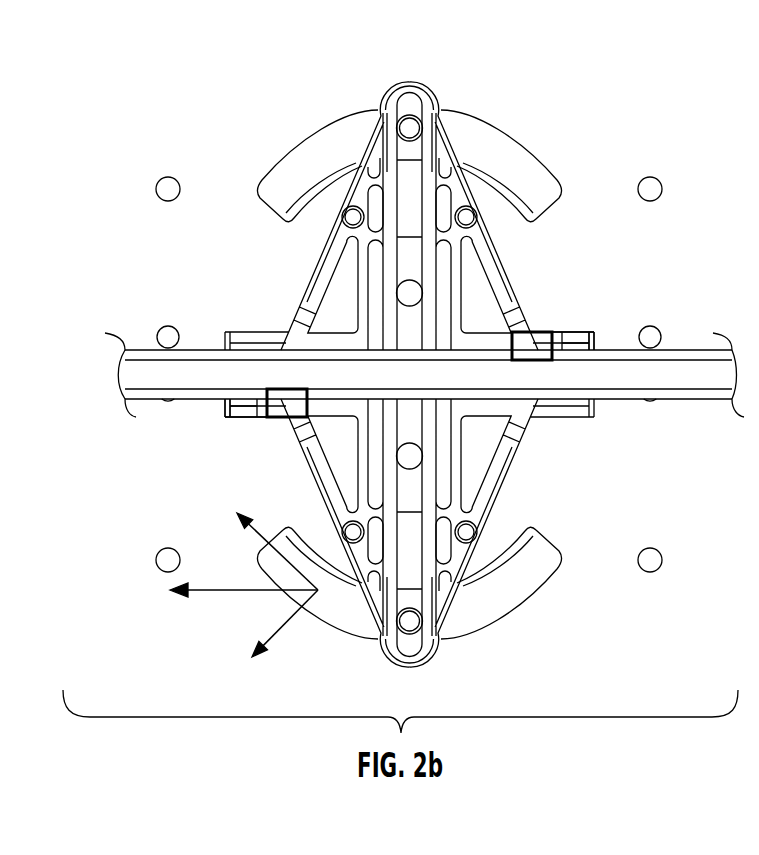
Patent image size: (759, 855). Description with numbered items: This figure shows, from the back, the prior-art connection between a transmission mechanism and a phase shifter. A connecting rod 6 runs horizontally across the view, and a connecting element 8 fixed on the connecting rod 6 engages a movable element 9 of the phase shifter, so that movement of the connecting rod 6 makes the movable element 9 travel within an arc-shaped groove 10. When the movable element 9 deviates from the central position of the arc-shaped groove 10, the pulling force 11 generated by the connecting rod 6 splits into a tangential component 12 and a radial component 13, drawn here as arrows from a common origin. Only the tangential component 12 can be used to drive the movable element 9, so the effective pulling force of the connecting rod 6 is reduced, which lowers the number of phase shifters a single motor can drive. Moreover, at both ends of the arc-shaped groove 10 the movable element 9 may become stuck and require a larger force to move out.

The connecting rod 6 is at (680, 368).
The connecting element 8 is at (511, 305).
The movable element 9 is at (425, 150).
The arc-shaped groove 10 is at (532, 176).
The pulling force 11 is at (229, 593).
The tangential component 12 is at (262, 544).
The radial component 13 is at (270, 632).